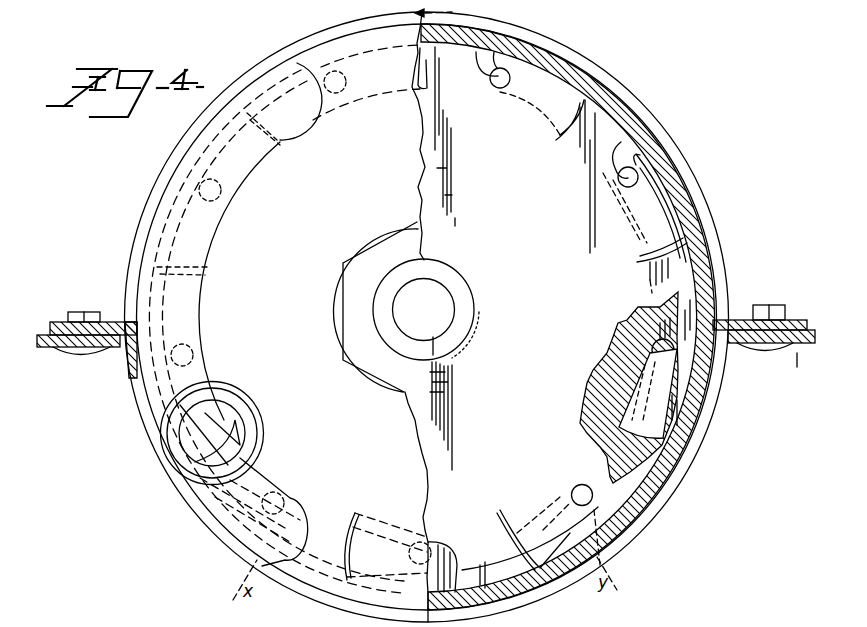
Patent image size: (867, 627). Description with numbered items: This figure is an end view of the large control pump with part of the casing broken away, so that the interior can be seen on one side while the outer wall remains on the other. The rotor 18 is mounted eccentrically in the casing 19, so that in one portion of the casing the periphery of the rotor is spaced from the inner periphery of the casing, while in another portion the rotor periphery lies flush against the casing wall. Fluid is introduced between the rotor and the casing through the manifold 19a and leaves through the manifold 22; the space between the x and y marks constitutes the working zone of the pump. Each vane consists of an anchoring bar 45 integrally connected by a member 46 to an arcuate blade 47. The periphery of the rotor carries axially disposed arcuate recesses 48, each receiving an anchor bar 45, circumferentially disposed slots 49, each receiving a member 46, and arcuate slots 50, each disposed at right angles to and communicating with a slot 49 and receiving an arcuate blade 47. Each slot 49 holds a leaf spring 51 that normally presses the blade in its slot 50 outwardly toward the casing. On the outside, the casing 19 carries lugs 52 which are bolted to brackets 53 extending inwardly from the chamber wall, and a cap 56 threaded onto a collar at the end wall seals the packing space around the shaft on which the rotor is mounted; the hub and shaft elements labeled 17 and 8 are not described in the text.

The shaft 8 is at (440, 310).
The hub 17 is at (456, 272).
The rotor 18 is at (517, 226).
The casing 19 is at (605, 108).
The manifold 19a is at (205, 493).
The manifold 22 is at (640, 521).
The anchoring bar 45 is at (497, 86).
The member 46 is at (670, 398).
The arcuate blade 47 is at (565, 130).
The arcuate recess 48 is at (488, 64).
The slot 49 is at (630, 400).
The arcuate slot 50 is at (497, 513).
The leaf spring 51 is at (549, 505).
The lug 52 is at (104, 322).
The bracket 53 is at (62, 352).
The cap 56 is at (342, 298).